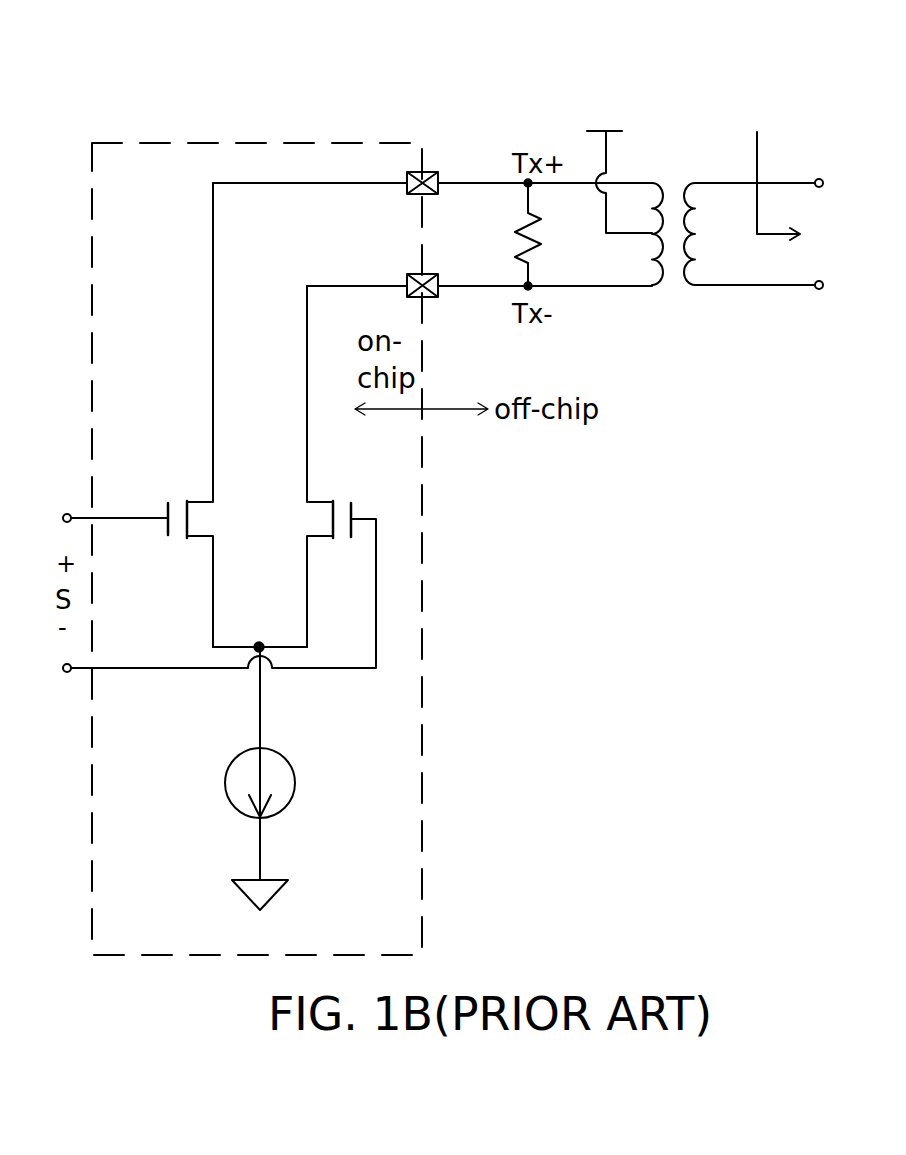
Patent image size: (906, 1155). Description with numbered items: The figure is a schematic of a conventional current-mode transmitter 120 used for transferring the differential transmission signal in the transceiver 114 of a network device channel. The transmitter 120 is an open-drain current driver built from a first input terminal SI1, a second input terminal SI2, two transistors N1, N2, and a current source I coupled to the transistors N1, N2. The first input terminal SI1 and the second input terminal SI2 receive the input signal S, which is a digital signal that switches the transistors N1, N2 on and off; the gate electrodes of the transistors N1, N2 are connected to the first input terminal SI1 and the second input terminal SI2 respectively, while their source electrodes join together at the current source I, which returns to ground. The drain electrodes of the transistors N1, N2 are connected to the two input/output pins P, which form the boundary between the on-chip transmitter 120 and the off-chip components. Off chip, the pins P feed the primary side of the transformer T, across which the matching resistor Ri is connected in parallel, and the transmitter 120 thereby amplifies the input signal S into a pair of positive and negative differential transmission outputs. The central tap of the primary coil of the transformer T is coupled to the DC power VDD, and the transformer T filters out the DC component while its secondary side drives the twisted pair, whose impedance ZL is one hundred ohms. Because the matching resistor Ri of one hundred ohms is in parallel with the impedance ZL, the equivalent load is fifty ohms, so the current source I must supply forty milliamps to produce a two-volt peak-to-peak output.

The transceiver 114 is at (106, 36).
The transmitter 120 is at (258, 143).
The input/output pins P is at (430, 297).
The transistor N1 is at (142, 415).
The transistor N2 is at (223, 477).
The first input terminal SI1 is at (68, 513).
The second input terminal SI2 is at (67, 673).
The current source I is at (270, 778).
The matching resistor Ri is at (546, 234).
The DC power VDD is at (619, 163).
The transformer T is at (684, 297).
The impedance of the wire ZL is at (772, 170).